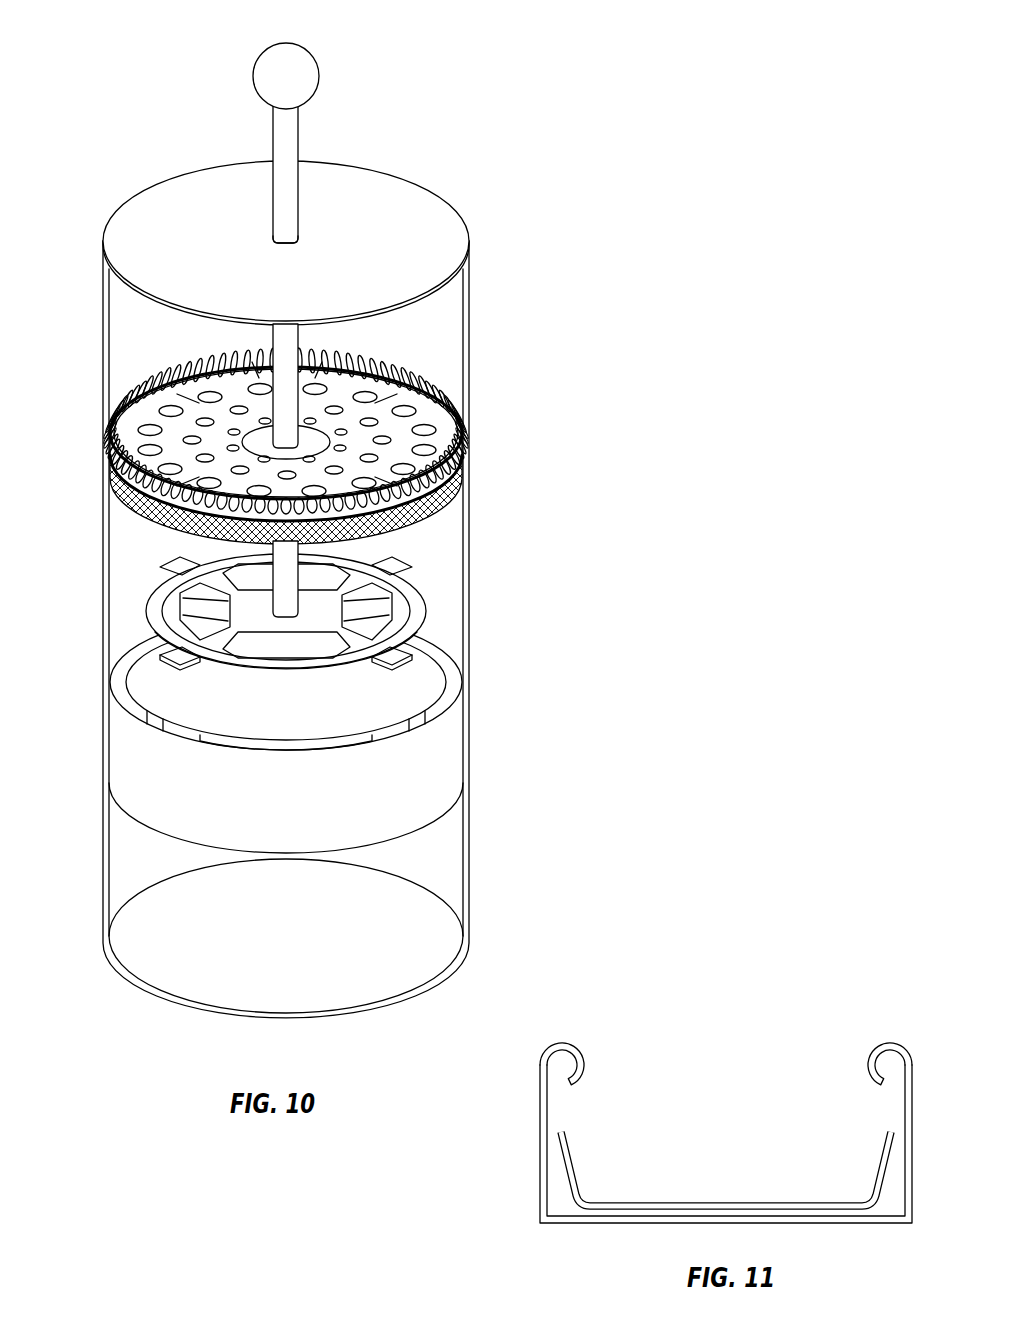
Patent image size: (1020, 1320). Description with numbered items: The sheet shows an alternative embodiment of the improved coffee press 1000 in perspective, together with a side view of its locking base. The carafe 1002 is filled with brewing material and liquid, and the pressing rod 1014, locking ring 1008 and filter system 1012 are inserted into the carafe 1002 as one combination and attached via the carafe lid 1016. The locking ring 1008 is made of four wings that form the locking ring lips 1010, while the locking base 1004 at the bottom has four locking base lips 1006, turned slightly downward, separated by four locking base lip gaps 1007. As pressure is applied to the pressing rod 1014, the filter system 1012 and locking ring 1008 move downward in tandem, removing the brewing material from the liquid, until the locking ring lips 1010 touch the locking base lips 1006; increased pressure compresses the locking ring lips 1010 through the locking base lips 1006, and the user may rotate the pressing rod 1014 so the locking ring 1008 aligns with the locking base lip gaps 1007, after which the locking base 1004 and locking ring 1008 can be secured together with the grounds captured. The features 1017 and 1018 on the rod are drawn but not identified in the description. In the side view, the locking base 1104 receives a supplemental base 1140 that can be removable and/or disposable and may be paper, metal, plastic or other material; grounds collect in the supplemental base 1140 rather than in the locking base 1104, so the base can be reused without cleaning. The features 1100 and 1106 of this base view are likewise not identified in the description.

In FIG. 10, the coffee press 1000 is at (301, 516).
In FIG. 10, the carafe 1002 is at (472, 310).
In FIG. 10, the locking base 1004 is at (435, 822).
In FIG. 10, the locking base lip 1006 is at (168, 706).
In FIG. 10, the locking base lip gap 1007 is at (152, 735).
In FIG. 10, the locking ring 1008 is at (373, 668).
In FIG. 10, the locking ring lip 1010 is at (392, 674).
In FIG. 10, the filter system 1012 is at (444, 380).
In FIG. 10, the pressing rod 1014 is at (300, 337).
In FIG. 10, the carafe lid 1016 is at (433, 192).
In FIG. 10, the rod opening in lid 1017 is at (288, 248).
In FIG. 10, the knob handle 1018 is at (284, 44).
In FIG. 11, the holder 1100 is at (680, 1145).
In FIG. 11, the locking base 1104 is at (540, 1144).
In FIG. 11, the hook 1106 is at (582, 1049).
In FIG. 11, the supplemental base 1140 is at (574, 1170).